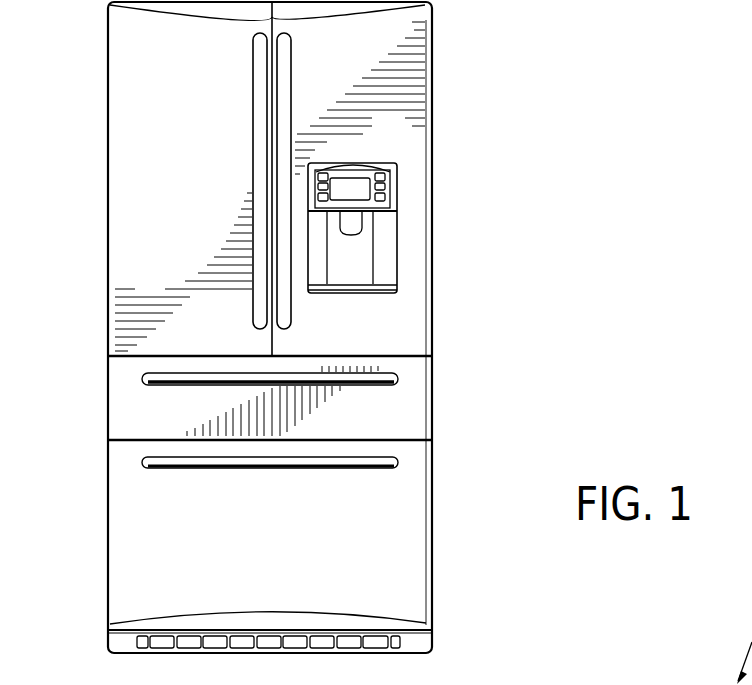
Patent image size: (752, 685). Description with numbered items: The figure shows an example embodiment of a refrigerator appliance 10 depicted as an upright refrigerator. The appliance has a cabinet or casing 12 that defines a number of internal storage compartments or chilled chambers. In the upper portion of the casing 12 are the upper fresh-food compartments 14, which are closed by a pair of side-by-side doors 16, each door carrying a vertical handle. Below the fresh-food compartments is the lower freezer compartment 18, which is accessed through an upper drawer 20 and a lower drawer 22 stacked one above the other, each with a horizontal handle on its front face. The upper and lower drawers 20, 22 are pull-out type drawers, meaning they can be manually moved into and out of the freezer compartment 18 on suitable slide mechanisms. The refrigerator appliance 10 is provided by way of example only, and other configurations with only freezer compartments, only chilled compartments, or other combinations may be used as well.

The refrigerator appliance 10 is at (338, 327).
The cabinet or casing 12 is at (433, 268).
The upper fresh-food compartments 14 is at (145, 150).
The doors 16 is at (175, 237).
The lower freezer compartment 18 is at (316, 395).
The upper drawer 20 is at (165, 427).
The lower drawer 22 is at (287, 554).